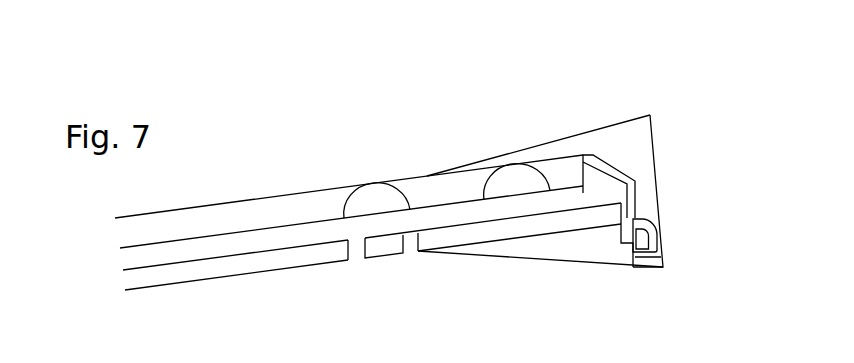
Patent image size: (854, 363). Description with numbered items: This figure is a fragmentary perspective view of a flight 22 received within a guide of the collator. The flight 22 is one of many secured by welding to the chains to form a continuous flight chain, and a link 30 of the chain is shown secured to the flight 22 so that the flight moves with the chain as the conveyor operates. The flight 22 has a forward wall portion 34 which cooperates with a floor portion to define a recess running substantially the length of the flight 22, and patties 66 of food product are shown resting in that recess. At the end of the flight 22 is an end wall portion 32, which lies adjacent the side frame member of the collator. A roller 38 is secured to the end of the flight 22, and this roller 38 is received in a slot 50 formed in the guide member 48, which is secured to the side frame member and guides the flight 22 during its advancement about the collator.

The flight 22 is at (359, 146).
The forward wall portion 34 is at (441, 185).
The patty 66 is at (355, 190).
The link 30 is at (383, 258).
The end wall portion 32 is at (604, 158).
The guide member 48 is at (652, 165).
The slot 50 is at (662, 258).
The roller 38 is at (648, 238).